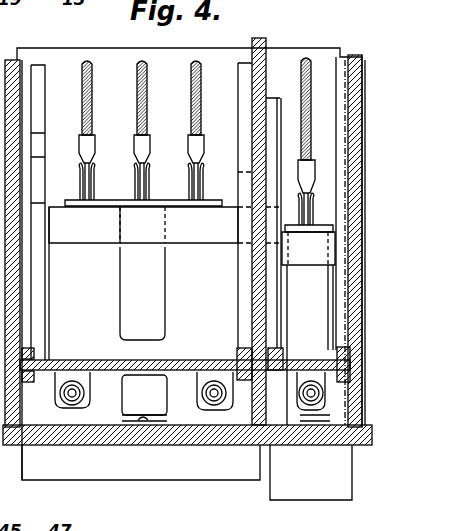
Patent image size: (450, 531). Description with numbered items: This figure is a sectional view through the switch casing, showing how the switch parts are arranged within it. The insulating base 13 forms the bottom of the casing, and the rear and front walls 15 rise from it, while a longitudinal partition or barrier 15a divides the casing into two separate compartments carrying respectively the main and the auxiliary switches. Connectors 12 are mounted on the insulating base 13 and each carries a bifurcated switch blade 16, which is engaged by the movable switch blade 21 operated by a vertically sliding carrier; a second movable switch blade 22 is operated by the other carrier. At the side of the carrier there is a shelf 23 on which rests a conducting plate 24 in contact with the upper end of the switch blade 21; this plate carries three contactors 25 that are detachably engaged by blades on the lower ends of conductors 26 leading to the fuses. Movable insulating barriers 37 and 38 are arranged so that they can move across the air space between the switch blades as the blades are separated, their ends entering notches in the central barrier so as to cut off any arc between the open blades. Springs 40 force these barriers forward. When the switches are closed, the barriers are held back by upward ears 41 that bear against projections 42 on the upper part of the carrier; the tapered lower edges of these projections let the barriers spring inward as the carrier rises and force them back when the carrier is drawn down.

The rear and front walls 15 is at (358, 62).
The longitudinal partition or barrier 15a is at (254, 270).
The projections 42 is at (45, 145).
The upward ears 41 is at (40, 278).
The conducting plate 24 is at (108, 208).
The shelf 23 is at (179, 225).
The movable switch blade 21 is at (142, 293).
The conductors 26 is at (90, 97).
The contactors 25 is at (95, 180).
The movable switch blade 22 is at (308, 241).
The movable insulating barrier 37 is at (172, 360).
The movable insulating barrier 38 is at (326, 340).
The springs 40 is at (78, 403).
The bifurcated switch blade 16 is at (144, 398).
The connectors 12 is at (210, 422).
The insulating base 13 is at (190, 445).